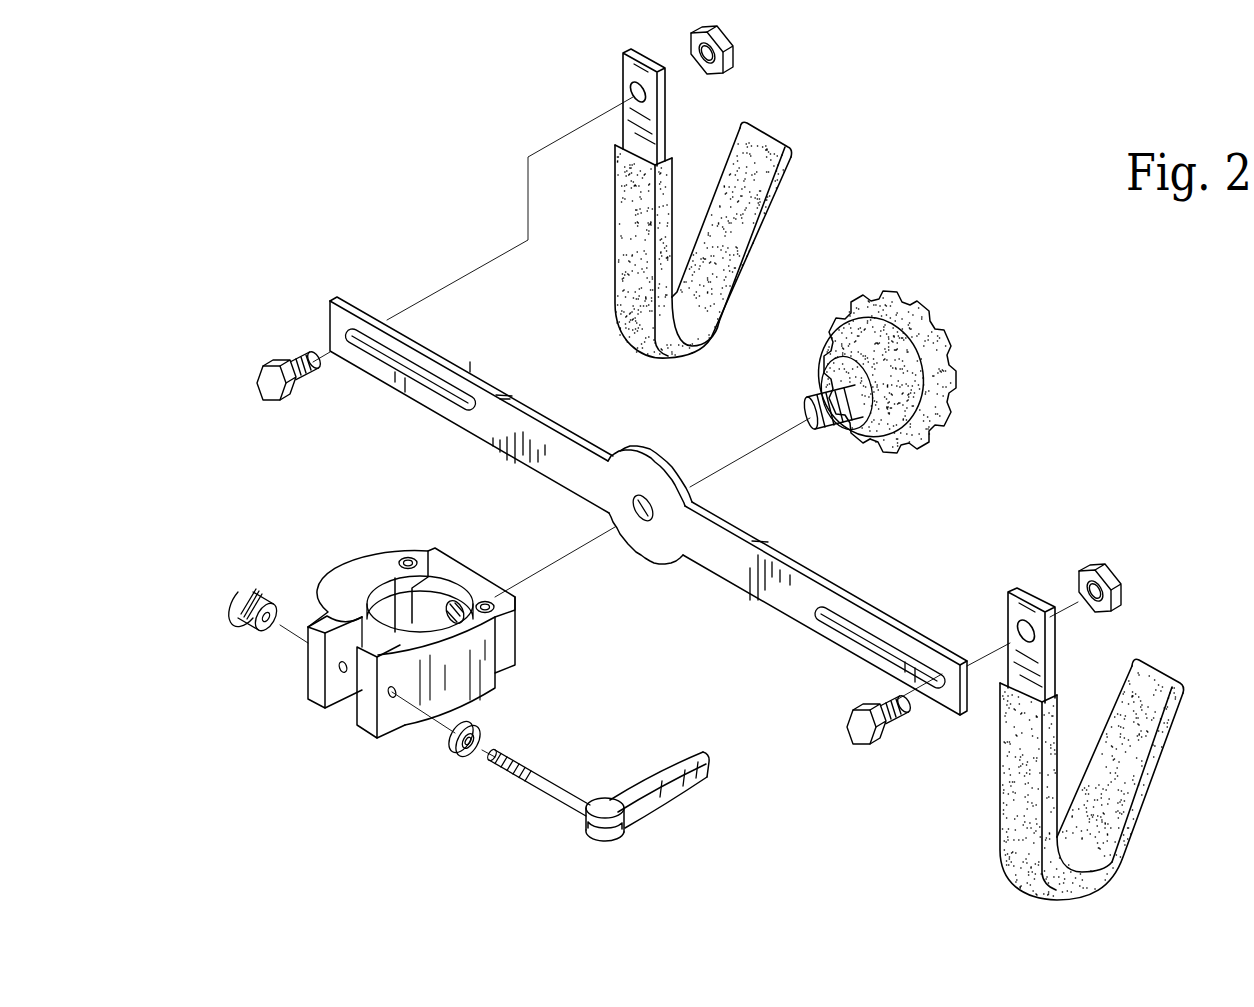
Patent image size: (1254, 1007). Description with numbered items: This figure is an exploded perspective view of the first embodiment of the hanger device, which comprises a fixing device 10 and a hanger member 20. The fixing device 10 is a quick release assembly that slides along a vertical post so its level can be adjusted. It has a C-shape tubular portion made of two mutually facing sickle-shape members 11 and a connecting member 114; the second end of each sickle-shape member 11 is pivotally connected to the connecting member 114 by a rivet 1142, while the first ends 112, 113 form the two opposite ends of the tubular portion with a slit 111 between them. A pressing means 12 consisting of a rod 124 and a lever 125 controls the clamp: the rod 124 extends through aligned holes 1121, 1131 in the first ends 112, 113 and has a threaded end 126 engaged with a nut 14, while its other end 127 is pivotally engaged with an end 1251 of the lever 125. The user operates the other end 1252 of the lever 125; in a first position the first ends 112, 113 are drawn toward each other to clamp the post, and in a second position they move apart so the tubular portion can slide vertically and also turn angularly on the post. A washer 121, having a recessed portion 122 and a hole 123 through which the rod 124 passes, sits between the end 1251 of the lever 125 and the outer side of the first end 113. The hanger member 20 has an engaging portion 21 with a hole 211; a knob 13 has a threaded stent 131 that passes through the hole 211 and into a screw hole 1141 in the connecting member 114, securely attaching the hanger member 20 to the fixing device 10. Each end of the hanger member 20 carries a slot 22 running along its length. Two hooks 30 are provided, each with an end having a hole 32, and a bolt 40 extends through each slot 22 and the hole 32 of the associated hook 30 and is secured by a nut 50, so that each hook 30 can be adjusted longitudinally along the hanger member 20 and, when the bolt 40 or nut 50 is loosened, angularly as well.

The fixing device 10 is at (416, 637).
The sickle-shape member 11 is at (416, 637).
The slit 111 is at (343, 700).
The first end 112 is at (313, 693).
The hole 1121 is at (340, 668).
The first end 113 is at (385, 730).
The hole 1131 is at (390, 697).
The connecting member 114 is at (492, 592).
The screw hole 1141 is at (454, 602).
The rivet 1142 is at (408, 557).
The pressing means 12 is at (572, 786).
The washer 121 is at (458, 752).
The recessed portion 122 is at (485, 736).
The hole 123 is at (480, 753).
The rod 124 is at (538, 826).
The lever 125 is at (652, 810).
The end of the lever 1251 is at (597, 834).
The other end of the lever 1252 is at (703, 770).
The threaded end 126 is at (513, 772).
The other end of the rod 127 is at (607, 805).
The knob 13 is at (891, 372).
The threaded stent 131 is at (822, 396).
The nut 14 is at (233, 612).
The hanger member 20 is at (569, 446).
The engaging portion 21 is at (645, 478).
The hole 211 is at (648, 527).
The slot 22 is at (474, 398).
The hook 30 is at (1090, 709).
The hole 32 is at (1008, 618).
The bolt 40 is at (870, 750).
The nut 50 is at (1100, 567).